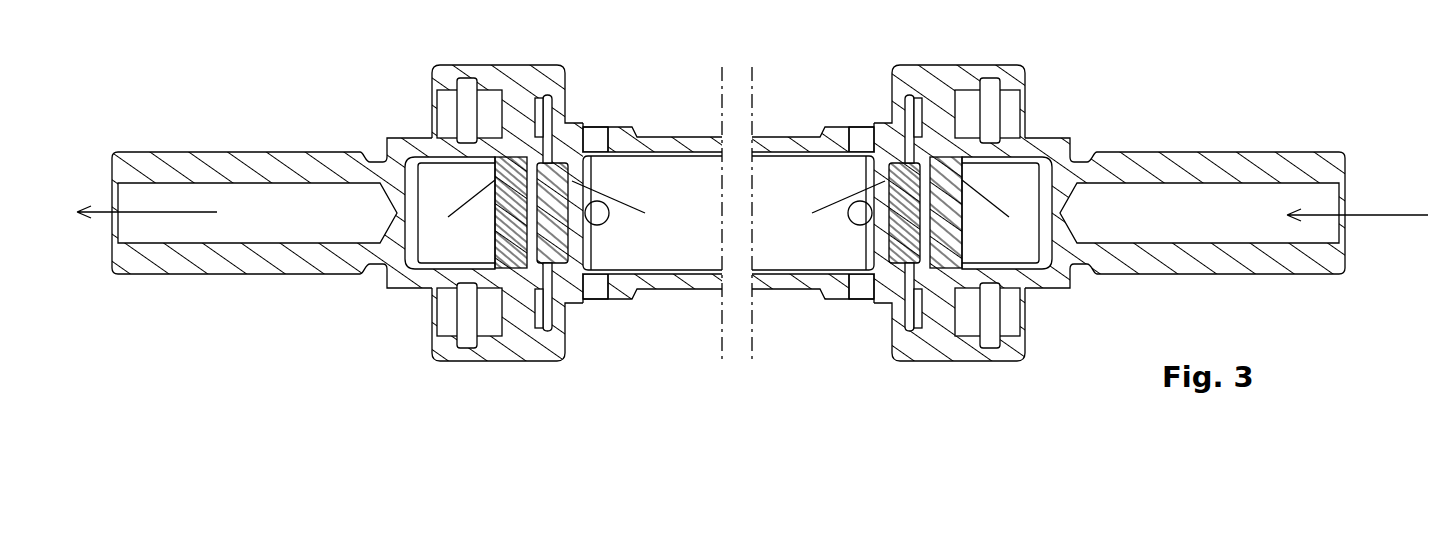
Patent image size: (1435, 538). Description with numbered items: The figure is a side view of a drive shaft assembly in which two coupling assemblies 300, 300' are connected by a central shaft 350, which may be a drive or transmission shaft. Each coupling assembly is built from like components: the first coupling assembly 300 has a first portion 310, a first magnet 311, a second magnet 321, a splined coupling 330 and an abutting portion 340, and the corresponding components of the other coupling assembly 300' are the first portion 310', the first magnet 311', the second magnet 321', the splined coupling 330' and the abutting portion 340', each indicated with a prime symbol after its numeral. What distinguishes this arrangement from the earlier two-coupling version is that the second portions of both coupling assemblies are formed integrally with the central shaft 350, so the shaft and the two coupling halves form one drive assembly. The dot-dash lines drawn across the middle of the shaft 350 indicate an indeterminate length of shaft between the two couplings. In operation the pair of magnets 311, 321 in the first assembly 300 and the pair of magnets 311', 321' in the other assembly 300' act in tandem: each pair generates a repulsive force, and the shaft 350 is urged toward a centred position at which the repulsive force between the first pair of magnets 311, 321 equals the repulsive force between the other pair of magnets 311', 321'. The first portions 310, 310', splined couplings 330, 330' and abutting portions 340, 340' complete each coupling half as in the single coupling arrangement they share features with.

The coupling assembly 300 is at (1090, 209).
The coupling assembly 300' is at (388, 219).
The first portion 310 is at (1048, 184).
The first portion 310' is at (417, 180).
The first magnet 311 is at (970, 143).
The first magnet 311' is at (486, 140).
The second magnet 321 is at (895, 83).
The second magnet 321' is at (560, 94).
The splined coupling 330 is at (949, 239).
The splined coupling 330' is at (507, 252).
The abutting portion 340 is at (874, 330).
The abutting portion 340' is at (599, 336).
The central shaft 350 is at (753, 137).